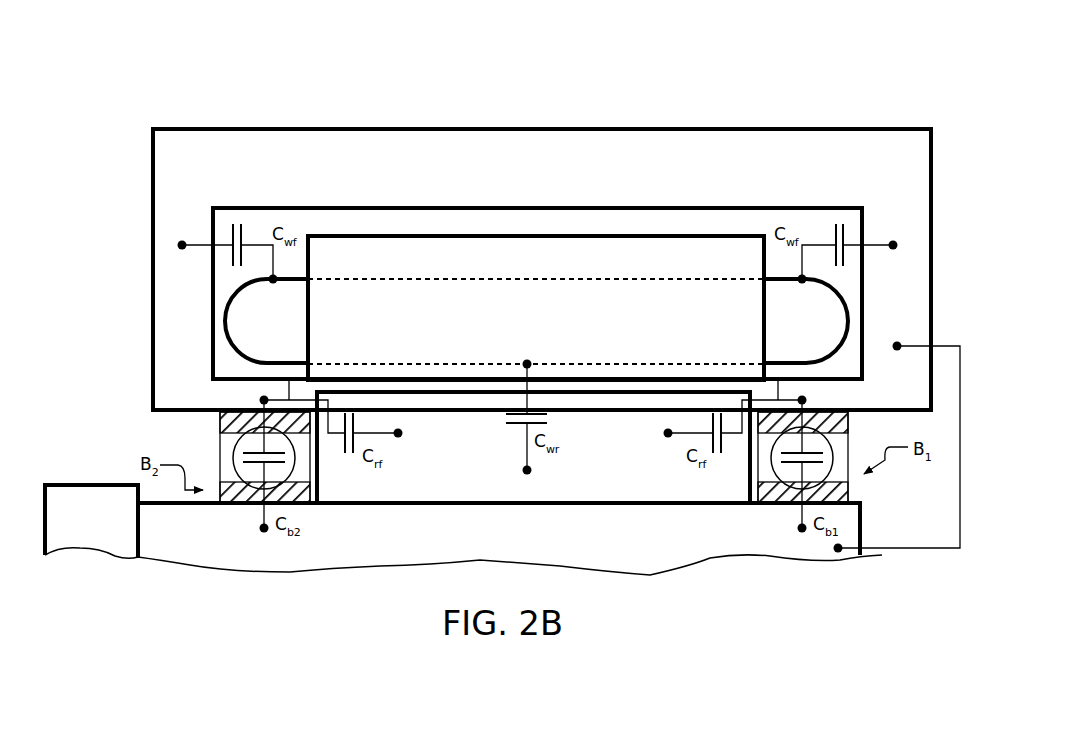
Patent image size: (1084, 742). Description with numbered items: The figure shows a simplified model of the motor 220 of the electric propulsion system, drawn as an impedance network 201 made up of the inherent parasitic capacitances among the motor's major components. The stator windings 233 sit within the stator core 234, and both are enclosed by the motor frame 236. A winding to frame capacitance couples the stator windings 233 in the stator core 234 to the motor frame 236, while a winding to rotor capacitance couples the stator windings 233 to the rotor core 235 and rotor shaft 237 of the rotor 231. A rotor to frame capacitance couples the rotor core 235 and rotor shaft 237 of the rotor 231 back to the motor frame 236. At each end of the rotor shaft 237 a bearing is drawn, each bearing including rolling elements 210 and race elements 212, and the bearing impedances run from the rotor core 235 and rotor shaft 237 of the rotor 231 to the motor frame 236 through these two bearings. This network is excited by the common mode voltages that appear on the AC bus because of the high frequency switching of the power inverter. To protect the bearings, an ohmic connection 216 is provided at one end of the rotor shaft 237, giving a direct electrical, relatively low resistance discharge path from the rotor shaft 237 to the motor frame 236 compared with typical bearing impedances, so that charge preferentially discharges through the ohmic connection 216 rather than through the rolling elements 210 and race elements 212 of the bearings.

The impedance network 201 is at (104, 262).
The motor 220 is at (232, 105).
The rotor 231 is at (110, 447).
The race elements 212 is at (218, 419).
The rolling elements 210 is at (236, 457).
The ohmic connection 216 is at (951, 549).
The stator windings 233 is at (228, 343).
The stator core 234 is at (542, 326).
The rotor core 235 is at (608, 465).
The motor frame 236 is at (547, 179).
The rotor shaft 237 is at (530, 547).